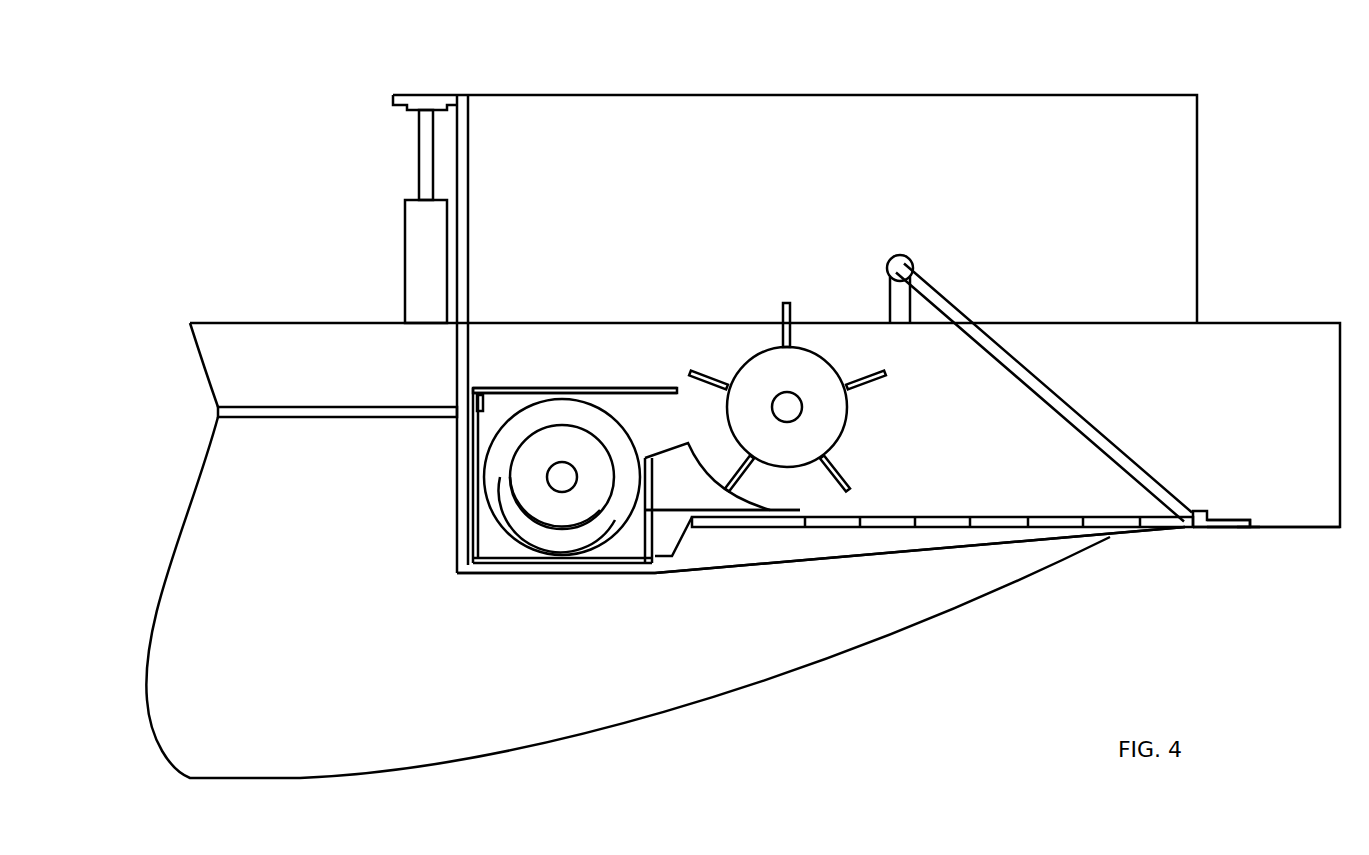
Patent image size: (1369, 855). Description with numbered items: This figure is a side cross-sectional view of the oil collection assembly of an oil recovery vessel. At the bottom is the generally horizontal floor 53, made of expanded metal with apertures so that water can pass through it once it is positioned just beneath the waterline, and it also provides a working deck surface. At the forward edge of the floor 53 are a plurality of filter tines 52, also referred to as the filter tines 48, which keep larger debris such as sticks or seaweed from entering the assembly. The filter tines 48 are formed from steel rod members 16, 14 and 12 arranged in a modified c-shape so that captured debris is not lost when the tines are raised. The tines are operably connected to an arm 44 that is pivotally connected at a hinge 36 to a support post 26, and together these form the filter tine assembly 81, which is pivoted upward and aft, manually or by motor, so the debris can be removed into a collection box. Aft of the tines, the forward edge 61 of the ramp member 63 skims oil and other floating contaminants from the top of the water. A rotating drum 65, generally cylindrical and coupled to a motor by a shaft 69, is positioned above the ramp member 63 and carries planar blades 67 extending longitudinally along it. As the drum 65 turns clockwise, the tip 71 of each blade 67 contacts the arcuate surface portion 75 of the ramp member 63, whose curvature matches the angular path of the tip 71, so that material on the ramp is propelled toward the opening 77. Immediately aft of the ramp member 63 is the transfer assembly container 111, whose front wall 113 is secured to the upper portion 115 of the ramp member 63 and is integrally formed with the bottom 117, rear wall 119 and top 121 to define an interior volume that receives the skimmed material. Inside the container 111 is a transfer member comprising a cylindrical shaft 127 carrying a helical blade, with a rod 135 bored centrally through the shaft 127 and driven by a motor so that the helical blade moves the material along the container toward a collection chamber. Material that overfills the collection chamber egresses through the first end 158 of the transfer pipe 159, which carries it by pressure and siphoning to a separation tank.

The member 12 is at (1203, 511).
The member 14 is at (1196, 530).
The member 16 is at (1237, 530).
The support post 26 is at (900, 310).
The hinge 36 is at (905, 256).
The arm 44 is at (1025, 370).
The filter tines 48 is at (1185, 530).
The filter tines 52 is at (1232, 514).
The floor 53 is at (1002, 517).
The forward edge 61 is at (805, 510).
The ramp member 63 is at (732, 485).
The rotating drum 65 is at (808, 368).
The blades 67 is at (789, 305).
The shaft 69 is at (785, 410).
The tip 71 is at (886, 373).
The arcuate surface portion 75 is at (717, 483).
The opening 77 is at (672, 418).
The filter tine assembly 81 is at (1145, 422).
The transfer assembly container 111 is at (462, 545).
The front wall 113 is at (624, 543).
The upper portion 115 is at (682, 480).
The bottom 117 is at (512, 560).
The rear wall 119 is at (470, 507).
The top 121 is at (530, 386).
The shaft 127 is at (563, 443).
The rod 135 is at (554, 490).
The first end 158 is at (470, 402).
The transfer pipe 159 is at (255, 405).